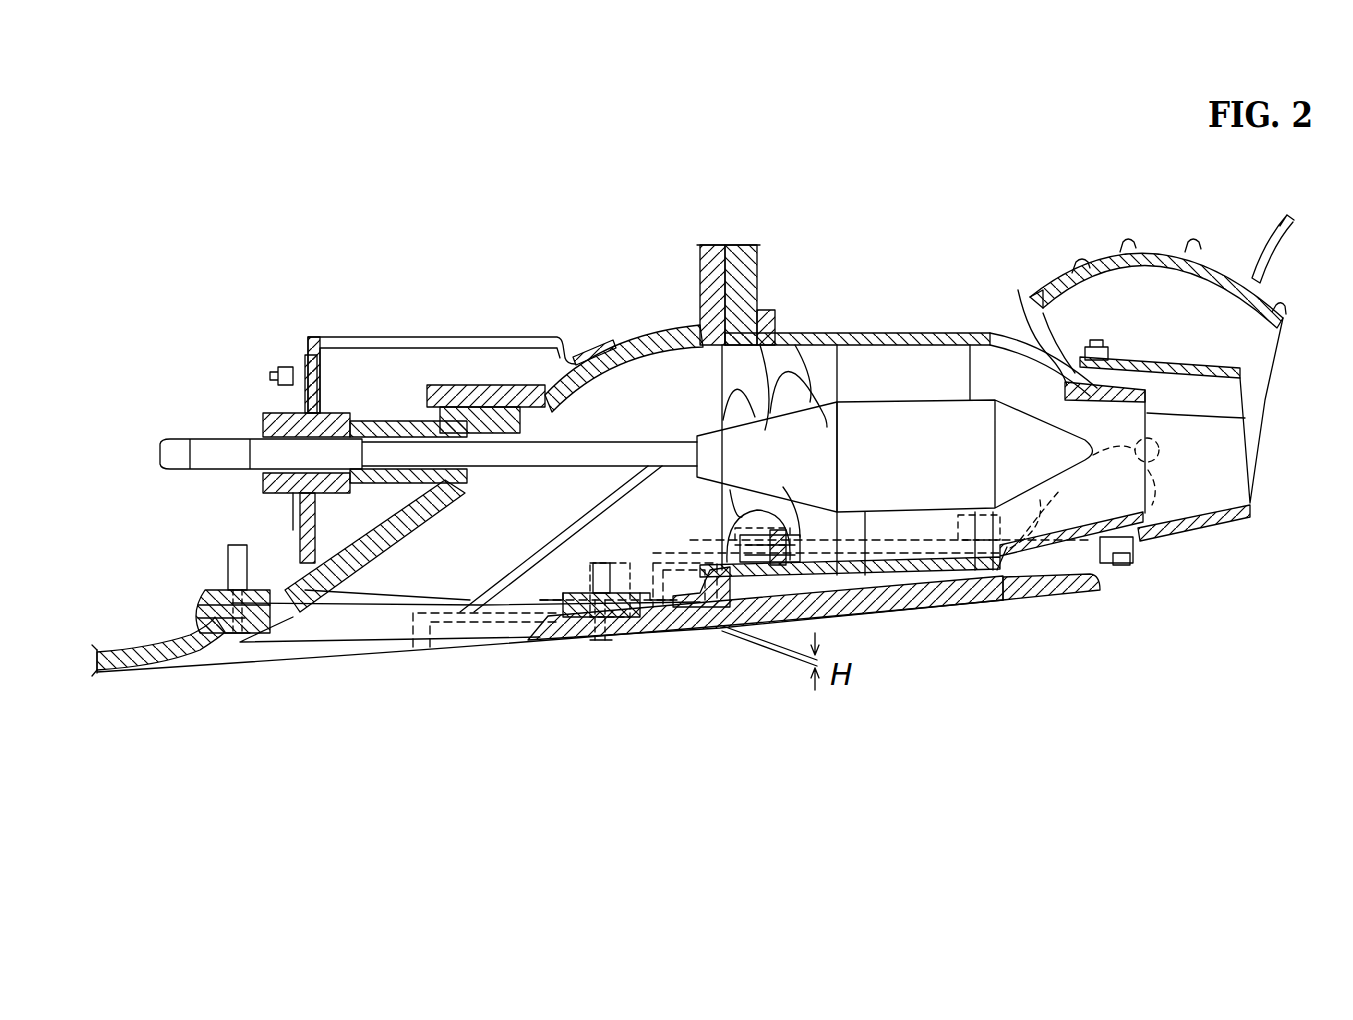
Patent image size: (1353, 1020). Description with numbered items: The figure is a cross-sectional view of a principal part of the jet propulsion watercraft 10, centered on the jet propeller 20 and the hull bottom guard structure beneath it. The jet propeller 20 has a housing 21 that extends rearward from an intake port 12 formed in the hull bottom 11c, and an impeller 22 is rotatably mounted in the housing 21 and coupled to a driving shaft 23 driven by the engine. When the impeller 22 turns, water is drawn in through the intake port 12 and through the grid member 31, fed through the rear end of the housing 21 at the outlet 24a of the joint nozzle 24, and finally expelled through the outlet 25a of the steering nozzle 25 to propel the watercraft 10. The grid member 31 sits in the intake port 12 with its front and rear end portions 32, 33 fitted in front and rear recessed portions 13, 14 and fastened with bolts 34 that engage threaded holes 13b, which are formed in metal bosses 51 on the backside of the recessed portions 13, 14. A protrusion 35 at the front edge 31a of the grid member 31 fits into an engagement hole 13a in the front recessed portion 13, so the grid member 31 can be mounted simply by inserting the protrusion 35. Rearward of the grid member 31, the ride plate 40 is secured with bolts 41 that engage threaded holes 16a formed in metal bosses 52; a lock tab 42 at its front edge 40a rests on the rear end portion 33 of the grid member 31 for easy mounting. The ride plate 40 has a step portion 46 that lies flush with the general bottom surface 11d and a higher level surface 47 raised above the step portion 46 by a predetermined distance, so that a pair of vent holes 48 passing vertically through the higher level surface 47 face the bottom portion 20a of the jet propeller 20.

The jet propulsion watercraft 10 is at (502, 186).
The hull bottom 11c is at (172, 660).
The bottom surface 11d is at (120, 665).
The intake port 12 is at (207, 657).
The front recessed portion 13 is at (310, 603).
The engagement hole 13a is at (190, 600).
The threaded holes 13b is at (248, 575).
The rear recessed portion 14 is at (540, 612).
The threaded holes 16a is at (790, 540).
The jet propeller 20 is at (887, 318).
The bottom portion 20a is at (865, 570).
The housing 21 is at (660, 322).
The impeller 22 is at (795, 372).
The driving shaft 23 is at (430, 445).
The joint nozzle 24 is at (1018, 290).
The outlet 24a is at (1245, 418).
The steering nozzle 25 is at (1205, 535).
The outlet 25a is at (1250, 500).
The grid member 31 is at (370, 662).
The front edge 31a is at (203, 600).
The front end portion 32 is at (253, 640).
The rear end portion 33 is at (560, 642).
The bolts 34 is at (605, 640).
The protrusion 35 is at (197, 625).
The ride plate 40 is at (881, 634).
The front edge 40a is at (620, 632).
The bolts 41 is at (770, 625).
The lock tab 42 is at (632, 612).
The step portion 46 is at (672, 633).
The higher level surface 47 is at (950, 605).
The vent holes 48 is at (735, 625).
The metal bosses 51 is at (232, 545).
The metal bosses 52 is at (752, 530).